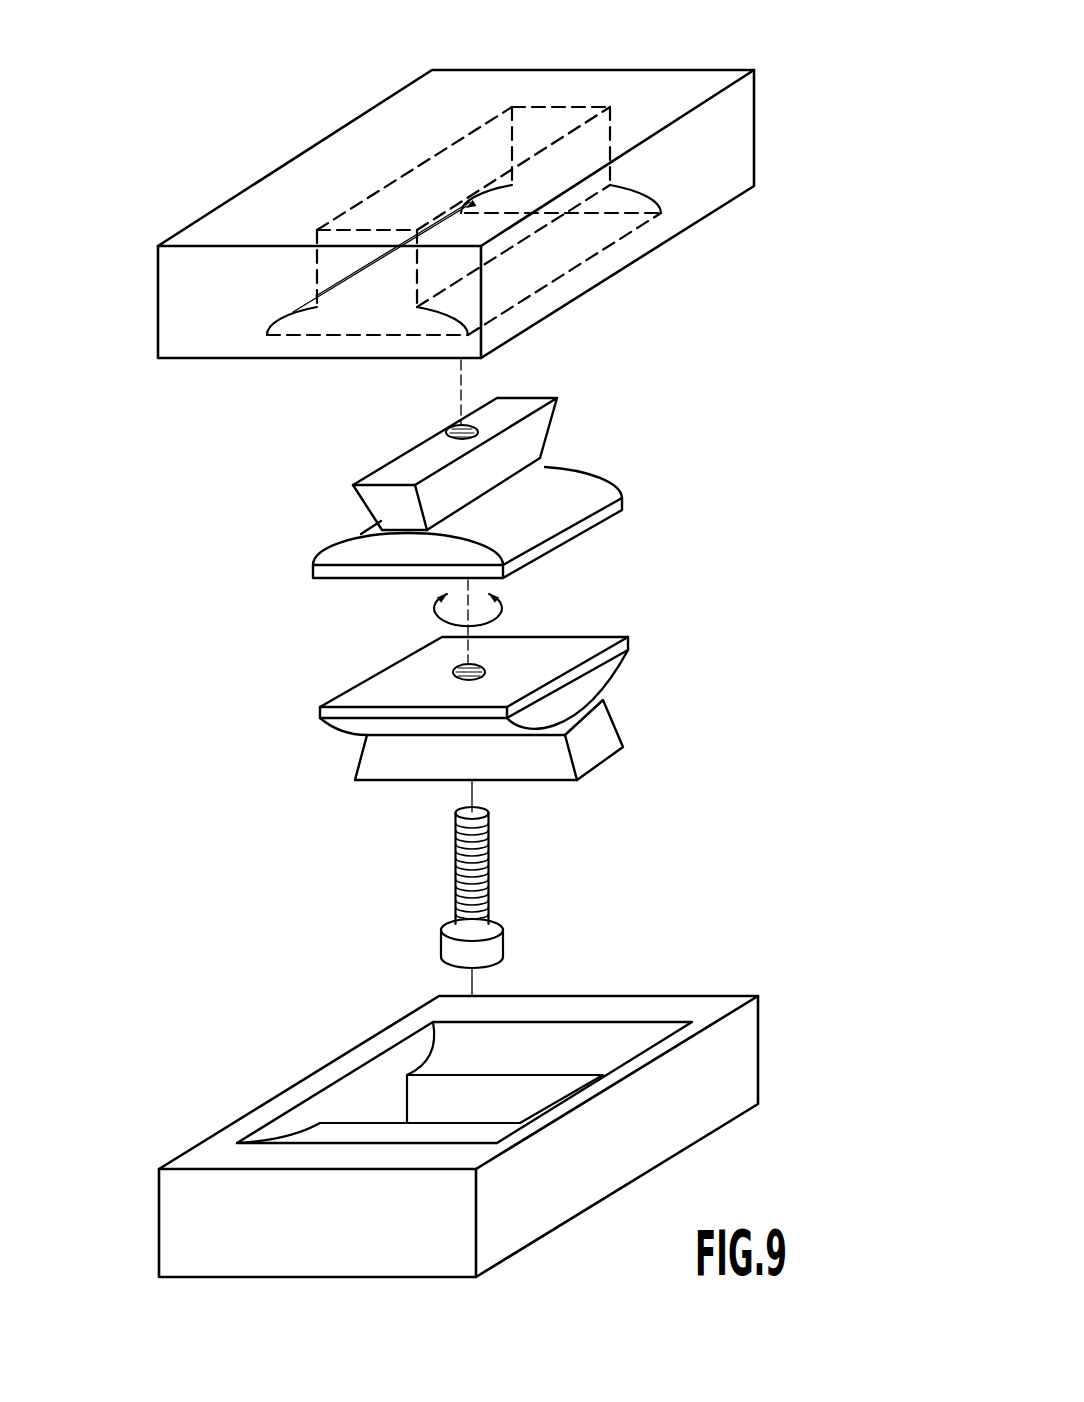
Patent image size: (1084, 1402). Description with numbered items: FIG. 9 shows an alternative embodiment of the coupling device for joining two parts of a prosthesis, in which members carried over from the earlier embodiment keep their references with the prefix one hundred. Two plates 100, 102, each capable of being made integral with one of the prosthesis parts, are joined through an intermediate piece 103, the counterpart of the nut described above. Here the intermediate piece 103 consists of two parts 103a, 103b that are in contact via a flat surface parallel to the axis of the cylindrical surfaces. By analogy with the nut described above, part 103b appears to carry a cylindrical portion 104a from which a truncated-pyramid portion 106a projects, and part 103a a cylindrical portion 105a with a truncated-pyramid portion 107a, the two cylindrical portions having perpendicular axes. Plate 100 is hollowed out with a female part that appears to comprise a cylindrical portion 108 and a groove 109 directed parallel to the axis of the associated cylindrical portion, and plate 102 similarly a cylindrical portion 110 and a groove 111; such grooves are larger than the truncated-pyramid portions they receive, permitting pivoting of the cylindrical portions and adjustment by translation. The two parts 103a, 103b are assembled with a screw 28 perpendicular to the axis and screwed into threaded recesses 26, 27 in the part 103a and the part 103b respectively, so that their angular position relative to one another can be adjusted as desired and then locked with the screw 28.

The upper block member 100 is at (469, 209).
The T-shaped slot in upper block 108 is at (646, 182).
The bore in upper block 109 is at (408, 272).
The threaded recess 27 is at (457, 424).
The upper connector base plate 104a is at (550, 483).
The upper dovetail tenon 106a is at (378, 503).
The part of intermediate piece 103b is at (456, 485).
The intermediate piece 103 is at (540, 582).
The part of intermediate piece 103a is at (479, 690).
The threaded recess 26 is at (465, 667).
The lower dovetail tenon 107a is at (593, 735).
The lower connector base plate 105a is at (355, 726).
The screw 28 is at (492, 873).
The pocket in recess of lower block 111 is at (367, 1090).
The recess in lower block 110 is at (462, 1045).
The lower block member 102 is at (458, 1153).